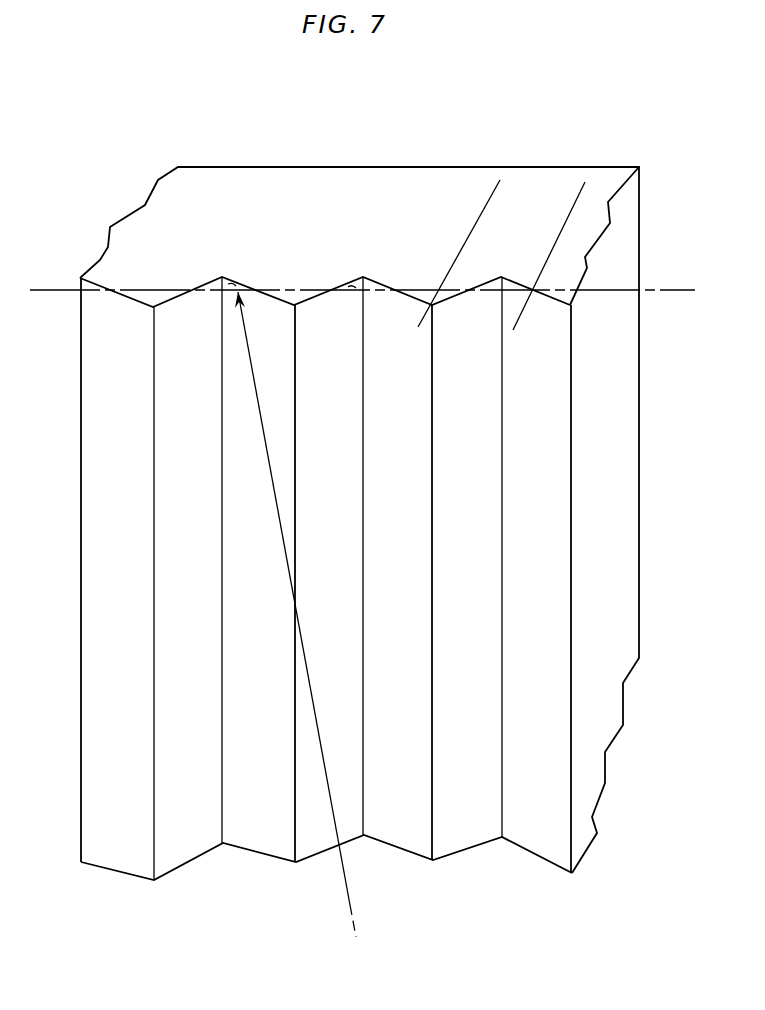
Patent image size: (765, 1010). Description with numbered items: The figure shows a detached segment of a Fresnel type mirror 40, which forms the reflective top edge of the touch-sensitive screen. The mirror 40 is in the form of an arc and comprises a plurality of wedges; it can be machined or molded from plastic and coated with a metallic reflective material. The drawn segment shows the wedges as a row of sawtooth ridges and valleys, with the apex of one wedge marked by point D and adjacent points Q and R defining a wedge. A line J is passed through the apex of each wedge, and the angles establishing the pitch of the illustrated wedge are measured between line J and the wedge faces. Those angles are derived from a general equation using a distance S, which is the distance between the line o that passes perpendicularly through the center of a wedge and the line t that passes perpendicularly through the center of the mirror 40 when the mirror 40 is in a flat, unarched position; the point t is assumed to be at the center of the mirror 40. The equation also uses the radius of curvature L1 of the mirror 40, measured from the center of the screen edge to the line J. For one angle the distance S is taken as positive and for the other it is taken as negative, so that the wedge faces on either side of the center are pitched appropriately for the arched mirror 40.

The Fresnel type mirror 40 is at (187, 852).
The line J is at (670, 289).
The radius of curvature L1 is at (346, 878).
The distance S is at (565, 220).
The line o is at (553, 250).
The ridge apex point D is at (221, 265).
The point Q is at (306, 313).
The point R is at (362, 265).
The line t is at (435, 307).